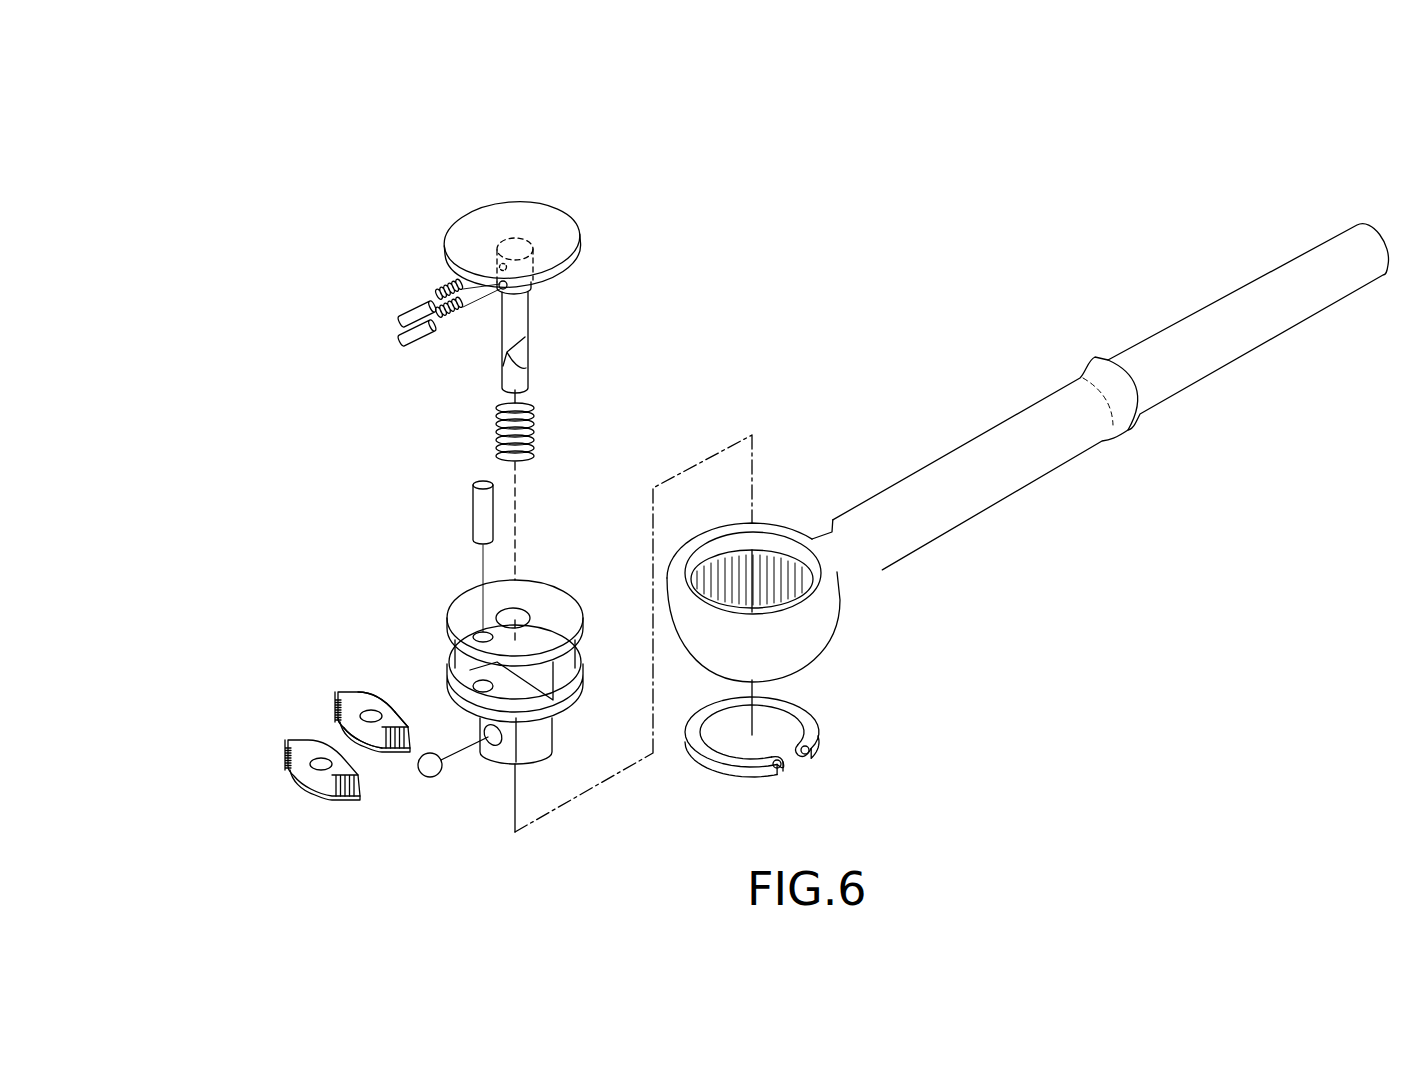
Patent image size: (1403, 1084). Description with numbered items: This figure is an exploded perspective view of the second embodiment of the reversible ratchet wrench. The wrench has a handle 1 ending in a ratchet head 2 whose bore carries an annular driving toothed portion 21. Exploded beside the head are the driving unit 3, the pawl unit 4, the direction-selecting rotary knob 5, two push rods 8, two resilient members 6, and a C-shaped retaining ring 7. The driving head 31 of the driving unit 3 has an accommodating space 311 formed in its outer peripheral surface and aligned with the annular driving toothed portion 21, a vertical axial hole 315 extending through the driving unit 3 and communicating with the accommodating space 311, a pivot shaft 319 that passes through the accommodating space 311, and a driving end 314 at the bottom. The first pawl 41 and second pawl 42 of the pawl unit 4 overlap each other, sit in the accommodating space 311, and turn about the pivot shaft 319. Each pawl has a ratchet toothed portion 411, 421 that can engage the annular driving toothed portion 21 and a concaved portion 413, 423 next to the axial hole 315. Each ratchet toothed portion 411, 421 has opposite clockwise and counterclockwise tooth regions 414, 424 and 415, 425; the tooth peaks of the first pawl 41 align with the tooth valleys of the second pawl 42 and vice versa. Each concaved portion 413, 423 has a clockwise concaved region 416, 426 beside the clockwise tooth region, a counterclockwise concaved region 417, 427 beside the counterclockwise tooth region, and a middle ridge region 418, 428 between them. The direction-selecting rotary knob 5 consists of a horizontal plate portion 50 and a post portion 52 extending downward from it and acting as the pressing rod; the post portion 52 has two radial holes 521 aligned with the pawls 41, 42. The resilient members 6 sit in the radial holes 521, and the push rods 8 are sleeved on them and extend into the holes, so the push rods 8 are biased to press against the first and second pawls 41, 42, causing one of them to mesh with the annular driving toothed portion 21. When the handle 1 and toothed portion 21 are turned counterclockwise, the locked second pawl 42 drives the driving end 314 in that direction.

The handle 1 is at (1231, 290).
The ratchet head 2 is at (802, 601).
The annular driving toothed portion 21 is at (813, 590).
The driving unit 3 is at (481, 657).
The driving head 31 is at (481, 657).
The accommodating space 311 is at (553, 678).
The driving end 314 is at (533, 747).
The vertical axial hole 315 is at (530, 613).
The pivot shaft 319 is at (477, 512).
The pawl unit 4 is at (287, 815).
The first pawl 41 is at (298, 734).
The second pawl 42 is at (287, 815).
The ratchet toothed portion 411 is at (246, 696).
The concaved portion 413 is at (290, 685).
The clockwise tooth region 414 is at (404, 753).
The counterclockwise tooth region 415 is at (336, 702).
The clockwise concaved region 416 is at (410, 715).
The counterclockwise concaved region 417 is at (368, 693).
The middle ridge region 418 is at (372, 692).
The ratchet toothed portion 421 is at (345, 785).
The concaved portion 423 is at (324, 770).
The clockwise tooth region 424 is at (345, 785).
The counterclockwise tooth region 425 is at (288, 755).
The clockwise concaved region 426 is at (365, 758).
The counterclockwise concaved region 427 is at (324, 770).
The middle ridge region 428 is at (343, 740).
The direction-selecting rotary knob 5 is at (555, 270).
The horizontal plate portion 50 is at (533, 221).
The post portion 52 is at (520, 312).
The radial holes 521 is at (477, 268).
The resilient members 6 is at (437, 288).
The C-shaped retaining ring 7 is at (827, 721).
The push rods 8 is at (404, 311).